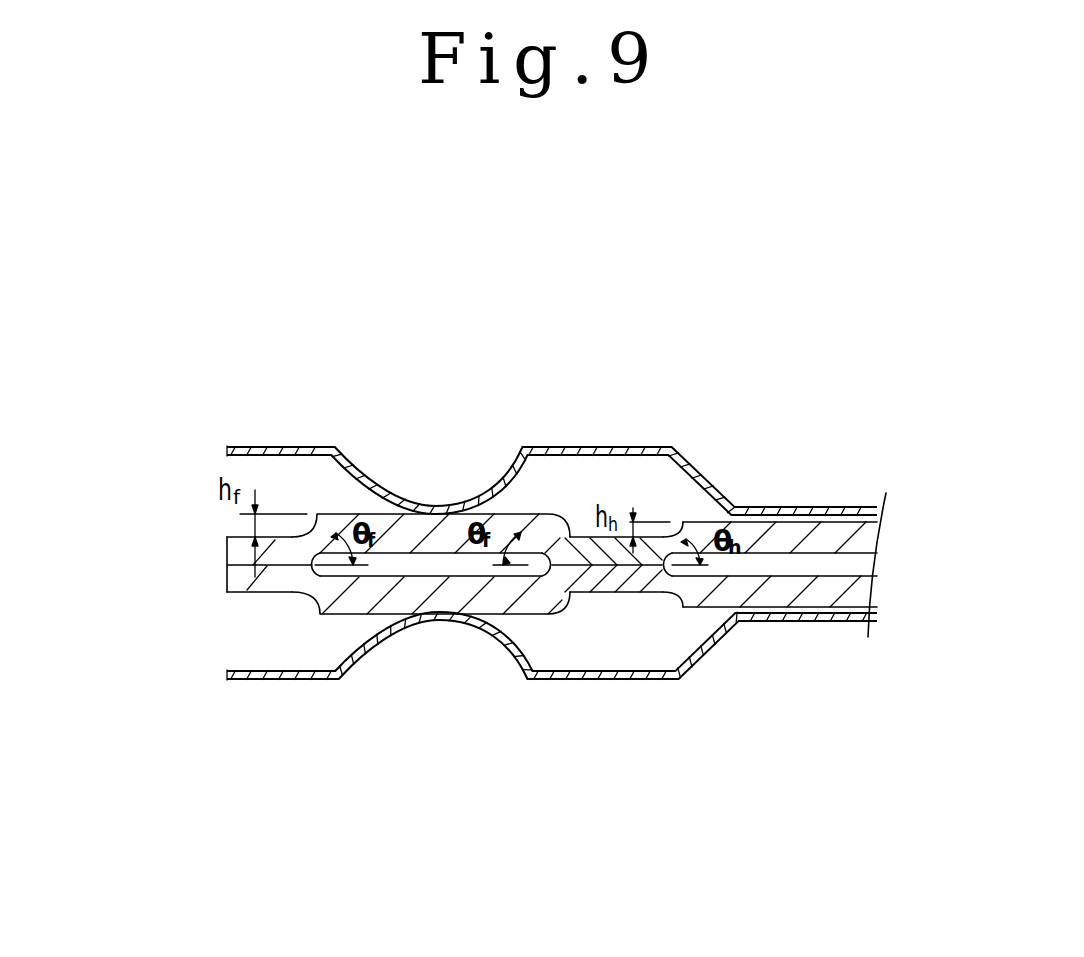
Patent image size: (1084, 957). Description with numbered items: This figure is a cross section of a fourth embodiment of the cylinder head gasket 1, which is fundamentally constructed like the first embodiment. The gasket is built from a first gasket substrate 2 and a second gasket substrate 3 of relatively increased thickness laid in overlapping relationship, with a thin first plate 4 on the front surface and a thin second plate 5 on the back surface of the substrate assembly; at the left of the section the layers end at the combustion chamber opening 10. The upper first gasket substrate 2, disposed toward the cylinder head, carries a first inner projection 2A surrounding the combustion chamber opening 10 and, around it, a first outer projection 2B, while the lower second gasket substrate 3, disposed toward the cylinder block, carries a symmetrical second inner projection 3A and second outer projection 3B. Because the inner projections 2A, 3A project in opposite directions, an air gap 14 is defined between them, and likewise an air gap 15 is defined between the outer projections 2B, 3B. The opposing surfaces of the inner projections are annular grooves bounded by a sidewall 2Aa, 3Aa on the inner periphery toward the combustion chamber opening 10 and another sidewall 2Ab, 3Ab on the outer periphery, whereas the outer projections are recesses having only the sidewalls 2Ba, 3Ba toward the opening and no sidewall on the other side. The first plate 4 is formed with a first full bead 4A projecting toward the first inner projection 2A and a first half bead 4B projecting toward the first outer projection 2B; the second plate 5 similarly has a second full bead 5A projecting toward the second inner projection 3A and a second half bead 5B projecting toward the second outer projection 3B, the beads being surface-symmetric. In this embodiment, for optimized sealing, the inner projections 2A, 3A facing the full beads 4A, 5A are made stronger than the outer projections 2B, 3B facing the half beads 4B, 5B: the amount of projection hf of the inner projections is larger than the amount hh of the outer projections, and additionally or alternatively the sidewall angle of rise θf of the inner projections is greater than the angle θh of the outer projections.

The cylinder head gasket 1 is at (852, 504).
The first gasket substrate 2 is at (862, 531).
The second gasket substrate 3 is at (862, 584).
The first plate 4 is at (617, 446).
The second plate 5 is at (602, 681).
The combustion chamber opening 10 is at (227, 547).
The air gap 14 is at (446, 577).
The air gap 15 is at (717, 567).
The first inner projection 2A is at (330, 518).
The first outer projection 2B is at (706, 522).
The sidewall 2Aa is at (318, 572).
The sidewall 2Ab is at (541, 540).
The sidewall 2Ba is at (676, 527).
The second inner projection 3A is at (350, 614).
The second outer projection 3B is at (818, 614).
The sidewall 3Aa is at (292, 591).
The sidewall 3Ab is at (556, 595).
The sidewall 3Ba is at (670, 593).
The first full bead 4A is at (424, 505).
The first half bead 4B is at (716, 494).
The second full bead 5A is at (473, 628).
The second half bead 5B is at (695, 663).